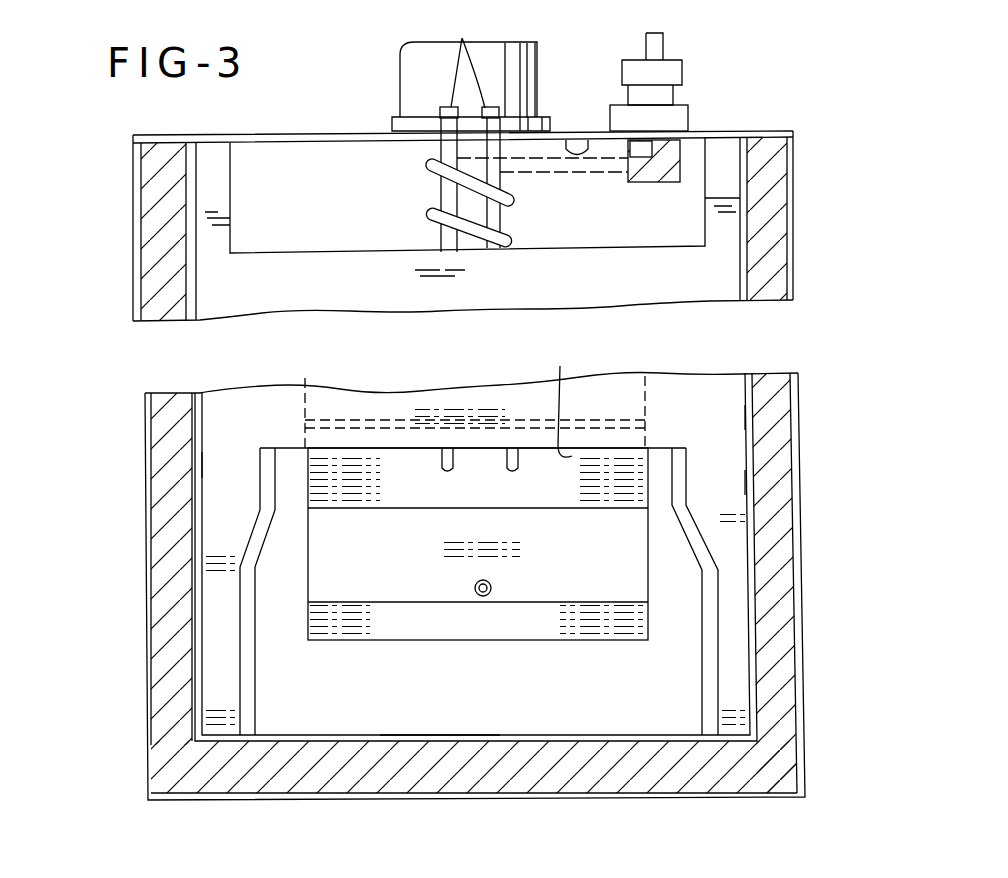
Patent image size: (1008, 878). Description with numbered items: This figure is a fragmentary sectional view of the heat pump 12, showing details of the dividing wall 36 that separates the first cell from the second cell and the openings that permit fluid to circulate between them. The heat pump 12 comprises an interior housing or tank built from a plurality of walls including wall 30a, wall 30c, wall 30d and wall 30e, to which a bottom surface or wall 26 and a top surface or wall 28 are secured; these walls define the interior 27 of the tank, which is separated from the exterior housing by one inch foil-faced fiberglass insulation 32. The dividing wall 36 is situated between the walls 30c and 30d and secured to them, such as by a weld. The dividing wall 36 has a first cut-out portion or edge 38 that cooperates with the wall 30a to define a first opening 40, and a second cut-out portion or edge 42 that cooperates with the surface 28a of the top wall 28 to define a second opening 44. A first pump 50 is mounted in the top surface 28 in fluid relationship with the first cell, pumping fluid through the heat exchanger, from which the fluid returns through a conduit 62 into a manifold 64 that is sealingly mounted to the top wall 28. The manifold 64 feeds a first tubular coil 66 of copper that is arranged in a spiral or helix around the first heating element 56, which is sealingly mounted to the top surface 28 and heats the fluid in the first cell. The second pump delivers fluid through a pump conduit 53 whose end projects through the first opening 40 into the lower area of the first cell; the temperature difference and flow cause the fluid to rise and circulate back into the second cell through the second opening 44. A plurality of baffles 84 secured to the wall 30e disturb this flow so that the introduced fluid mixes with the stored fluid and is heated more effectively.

The heat pump 12 is at (143, 586).
The bottom surface or wall 26 is at (460, 798).
The interior 27 is at (670, 292).
The top surface or wall 28 is at (250, 134).
The surface of top wall 28a is at (592, 136).
The wall 30a is at (441, 735).
The wall 30c is at (735, 483).
The wall 30d is at (742, 416).
The wall 30e is at (205, 476).
The foil-faced fiberglass insulation 32 is at (170, 395).
The dividing wall 36 is at (397, 287).
The first cut-out portion or edge 38 is at (567, 302).
The first opening 40 is at (288, 679).
The second cut-out portion or edge 42 is at (543, 246).
The second opening 44 is at (382, 186).
The first pump 50 is at (400, 72).
The pump conduit 53 is at (492, 588).
The first heating element 56 is at (466, 31).
The conduit 62 is at (652, 48).
The manifold 64 is at (690, 118).
The first tubular coil 66 is at (430, 218).
The baffles 84 is at (418, 576).